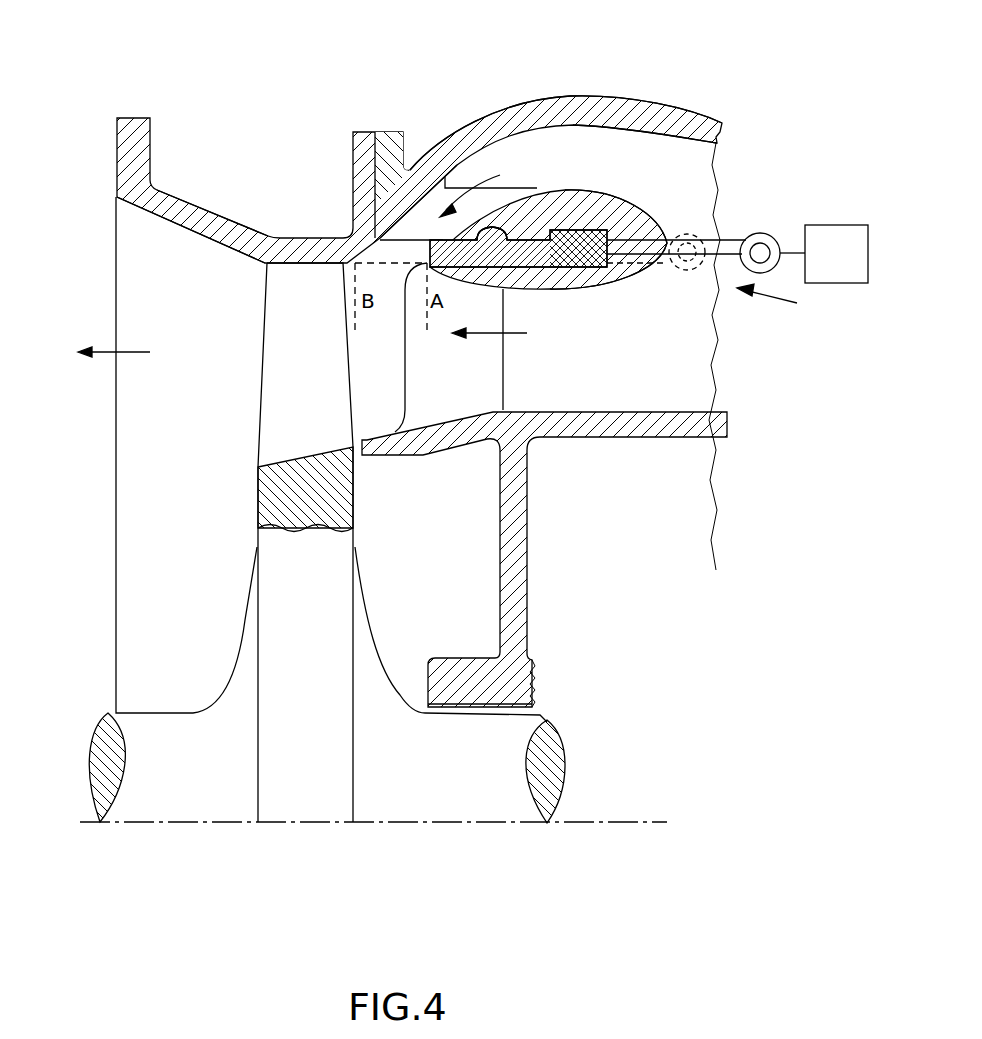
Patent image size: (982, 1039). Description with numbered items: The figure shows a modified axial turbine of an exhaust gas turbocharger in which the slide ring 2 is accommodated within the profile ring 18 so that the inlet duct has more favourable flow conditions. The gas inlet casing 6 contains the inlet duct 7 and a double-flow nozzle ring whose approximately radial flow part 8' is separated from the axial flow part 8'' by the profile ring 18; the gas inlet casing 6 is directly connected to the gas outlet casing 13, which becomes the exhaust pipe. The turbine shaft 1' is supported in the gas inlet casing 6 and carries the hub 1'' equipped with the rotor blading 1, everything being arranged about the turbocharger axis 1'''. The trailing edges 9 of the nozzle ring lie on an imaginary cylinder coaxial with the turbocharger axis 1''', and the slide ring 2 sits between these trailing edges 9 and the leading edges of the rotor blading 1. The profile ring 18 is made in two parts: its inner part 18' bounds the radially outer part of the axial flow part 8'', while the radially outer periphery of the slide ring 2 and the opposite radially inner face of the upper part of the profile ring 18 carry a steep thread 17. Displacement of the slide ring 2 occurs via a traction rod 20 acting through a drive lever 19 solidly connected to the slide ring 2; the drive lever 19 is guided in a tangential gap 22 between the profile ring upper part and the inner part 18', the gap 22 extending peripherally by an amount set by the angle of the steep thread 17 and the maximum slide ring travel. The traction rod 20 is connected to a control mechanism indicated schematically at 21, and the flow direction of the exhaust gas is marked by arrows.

The rotor blading 1 is at (220, 542).
The turbine shaft 1' is at (327, 545).
The hub 1'' is at (219, 489).
The turbocharger axis 1''' is at (373, 857).
The slide ring 2 is at (501, 329).
The gas inlet casing 6 is at (693, 125).
The inlet duct 7 is at (683, 340).
The radial flow part of nozzle ring 8' is at (475, 129).
The axial flow part of nozzle ring 8'' is at (544, 536).
The trailing edges 9 is at (413, 238).
The gas outlet casing 13 is at (218, 233).
The steep thread 17 is at (523, 236).
The profile ring 18 is at (616, 146).
The inner part of profile ring 18' is at (608, 298).
The drive lever 19 is at (725, 248).
The traction rod 20 is at (760, 240).
The control mechanism 21 is at (850, 267).
The tangential gap 22 is at (650, 288).